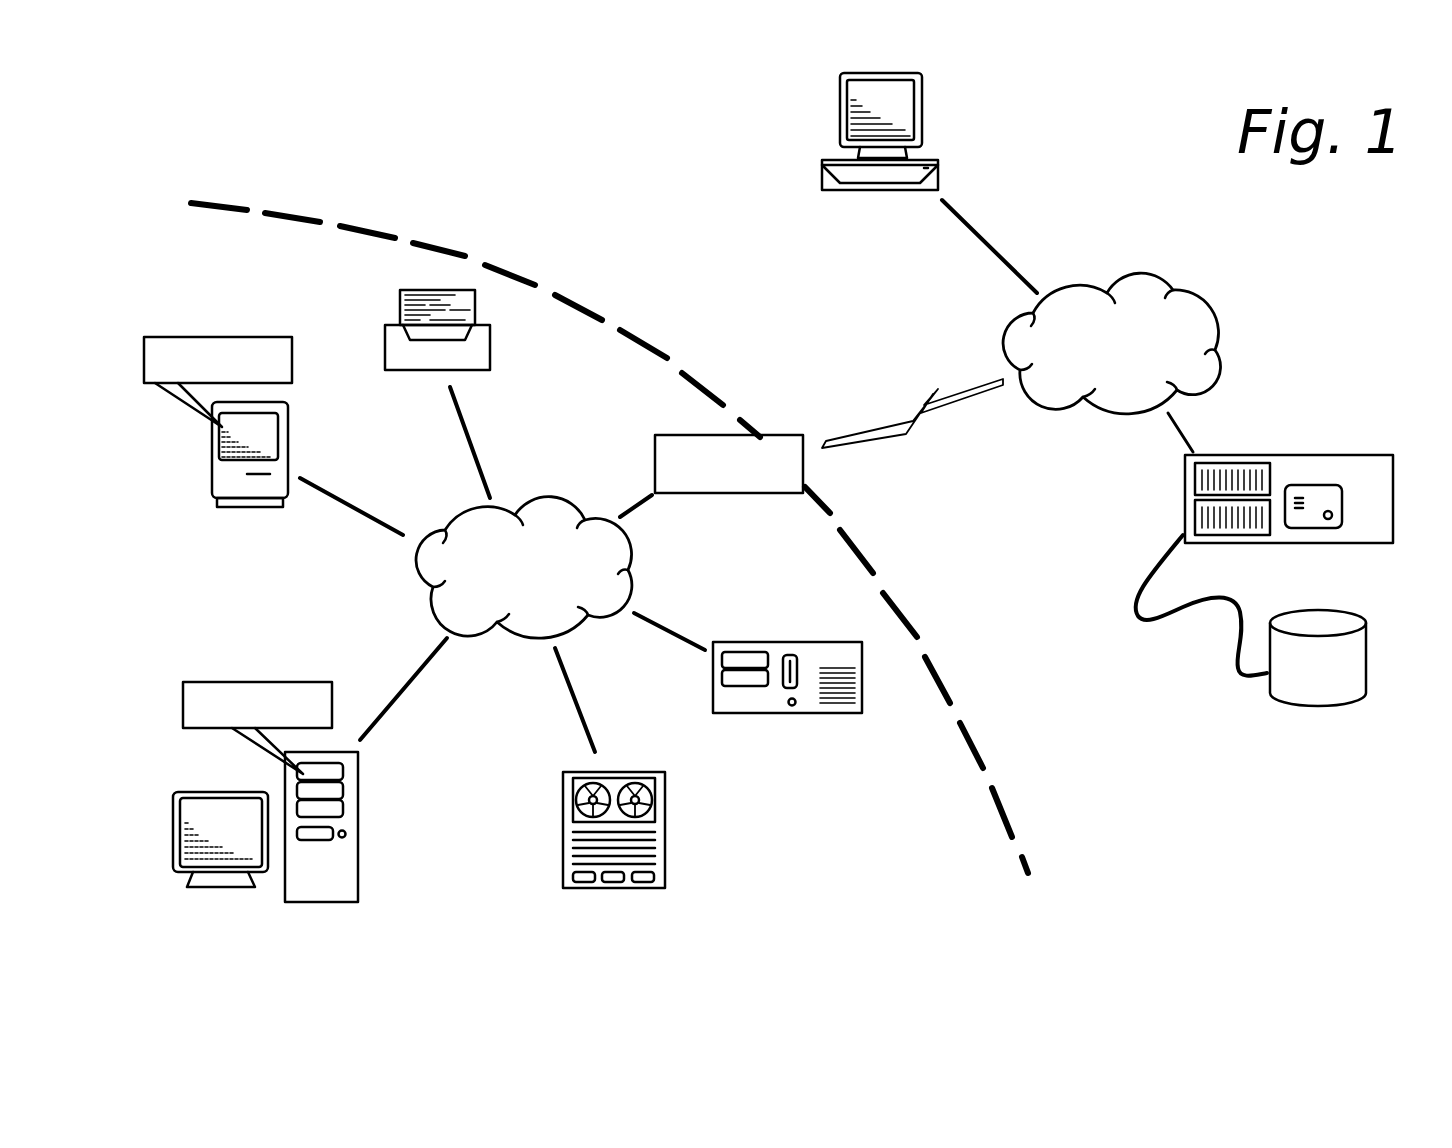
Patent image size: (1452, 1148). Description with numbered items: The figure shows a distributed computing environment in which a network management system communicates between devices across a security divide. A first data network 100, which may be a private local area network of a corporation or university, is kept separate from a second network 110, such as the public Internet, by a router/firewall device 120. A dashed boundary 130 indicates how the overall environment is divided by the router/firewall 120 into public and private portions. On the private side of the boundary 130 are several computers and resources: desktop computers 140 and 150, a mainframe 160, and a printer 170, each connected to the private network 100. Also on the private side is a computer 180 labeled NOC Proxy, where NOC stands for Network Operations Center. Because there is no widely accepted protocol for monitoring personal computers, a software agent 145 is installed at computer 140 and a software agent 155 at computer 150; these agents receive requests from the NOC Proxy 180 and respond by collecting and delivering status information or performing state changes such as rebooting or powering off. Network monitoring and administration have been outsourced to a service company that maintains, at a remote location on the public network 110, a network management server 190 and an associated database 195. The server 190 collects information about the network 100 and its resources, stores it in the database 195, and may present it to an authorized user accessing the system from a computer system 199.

The first data network 100 is at (502, 569).
The second network 110 is at (1111, 362).
The router/firewall device 120 is at (655, 437).
The dashed boundary 130 is at (232, 195).
The desktop computer 140 is at (212, 491).
The agent 145 is at (192, 338).
The desktop computer 150 is at (358, 887).
The agent 155 is at (229, 681).
The mainframe 160 is at (666, 863).
The printer 170 is at (490, 360).
The NOC Proxy computer 180 is at (848, 713).
The network management server 190 is at (1380, 545).
The database 195 is at (1318, 658).
The computer system 199 is at (938, 162).